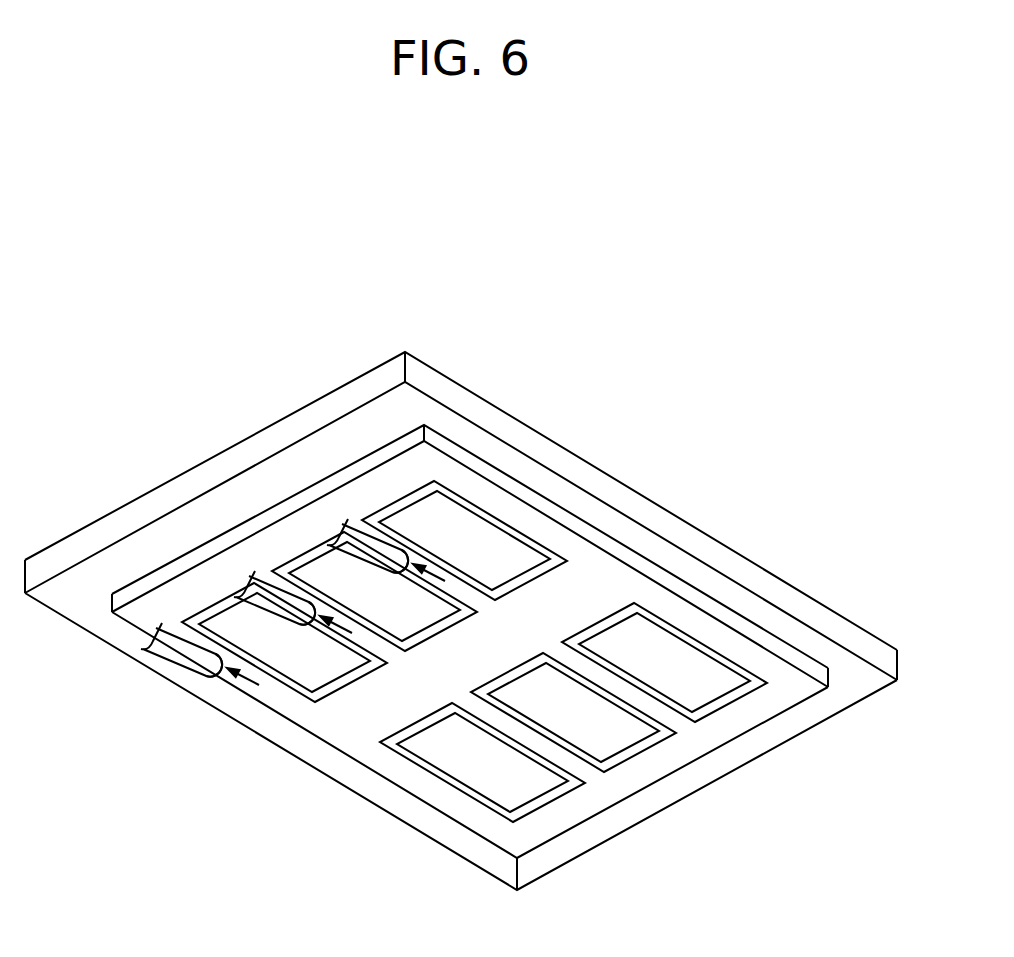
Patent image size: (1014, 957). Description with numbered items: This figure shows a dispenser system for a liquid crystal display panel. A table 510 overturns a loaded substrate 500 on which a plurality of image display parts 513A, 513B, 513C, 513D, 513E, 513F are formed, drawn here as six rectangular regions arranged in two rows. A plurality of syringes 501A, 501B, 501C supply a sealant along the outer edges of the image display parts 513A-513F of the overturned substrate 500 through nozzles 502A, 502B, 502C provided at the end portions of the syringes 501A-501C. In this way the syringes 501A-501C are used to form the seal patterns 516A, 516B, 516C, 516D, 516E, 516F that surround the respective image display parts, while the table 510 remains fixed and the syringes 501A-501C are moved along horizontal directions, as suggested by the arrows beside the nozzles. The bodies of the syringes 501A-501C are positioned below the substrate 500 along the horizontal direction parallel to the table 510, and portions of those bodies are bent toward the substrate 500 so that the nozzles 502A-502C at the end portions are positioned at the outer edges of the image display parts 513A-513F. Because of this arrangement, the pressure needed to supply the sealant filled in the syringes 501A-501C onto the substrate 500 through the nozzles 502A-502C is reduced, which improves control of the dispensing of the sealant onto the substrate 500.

The substrate 500 is at (462, 621).
The table 510 is at (514, 556).
The image display part 513A is at (664, 662).
The image display part 513B is at (573, 712).
The image display part 513C is at (482, 762).
The image display part 513D is at (464, 540).
The image display part 513E is at (374, 591).
The image display part 513F is at (284, 642).
The seal pattern 516A is at (707, 697).
The seal pattern 516B is at (616, 748).
The seal pattern 516C is at (525, 798).
The seal pattern 516D is at (523, 511).
The seal pattern 516E is at (506, 556).
The seal pattern 516F is at (284, 697).
The syringe 501A is at (152, 564).
The syringe 501B is at (244, 513).
The syringe 501C is at (337, 461).
The nozzle 502A is at (152, 559).
The nozzle 502B is at (245, 508).
The nozzle 502C is at (338, 456).